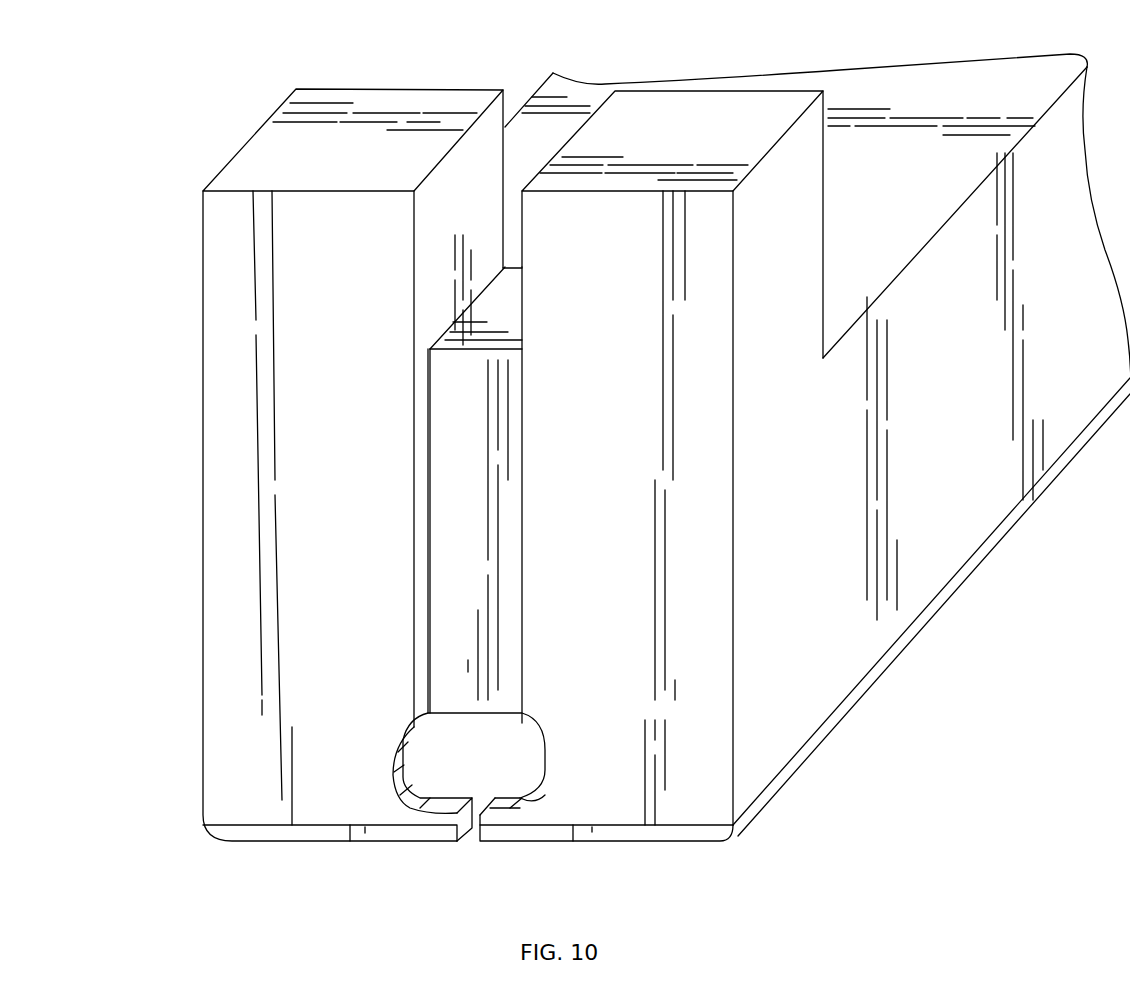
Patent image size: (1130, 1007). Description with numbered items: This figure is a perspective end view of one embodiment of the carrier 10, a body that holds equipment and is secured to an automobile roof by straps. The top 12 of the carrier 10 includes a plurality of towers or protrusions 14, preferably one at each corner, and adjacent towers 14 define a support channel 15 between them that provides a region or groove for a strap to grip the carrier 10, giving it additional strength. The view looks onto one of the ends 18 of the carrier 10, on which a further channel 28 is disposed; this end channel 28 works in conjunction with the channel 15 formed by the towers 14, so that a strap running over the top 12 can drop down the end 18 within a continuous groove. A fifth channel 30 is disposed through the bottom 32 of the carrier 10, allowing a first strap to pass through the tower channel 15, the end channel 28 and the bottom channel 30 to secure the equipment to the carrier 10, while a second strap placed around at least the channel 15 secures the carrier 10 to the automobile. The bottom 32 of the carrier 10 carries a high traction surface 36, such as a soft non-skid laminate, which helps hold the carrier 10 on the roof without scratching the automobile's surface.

The carrier 10 is at (172, 119).
The top 12 is at (902, 235).
The towers or protrusions 14 is at (410, 156).
The support channel 15 is at (449, 286).
The end 18 is at (184, 478).
The third and fourth channels 28 is at (456, 660).
The fifth channel 30 is at (478, 784).
The bottom 32 is at (750, 844).
The high traction surface 36 is at (553, 824).